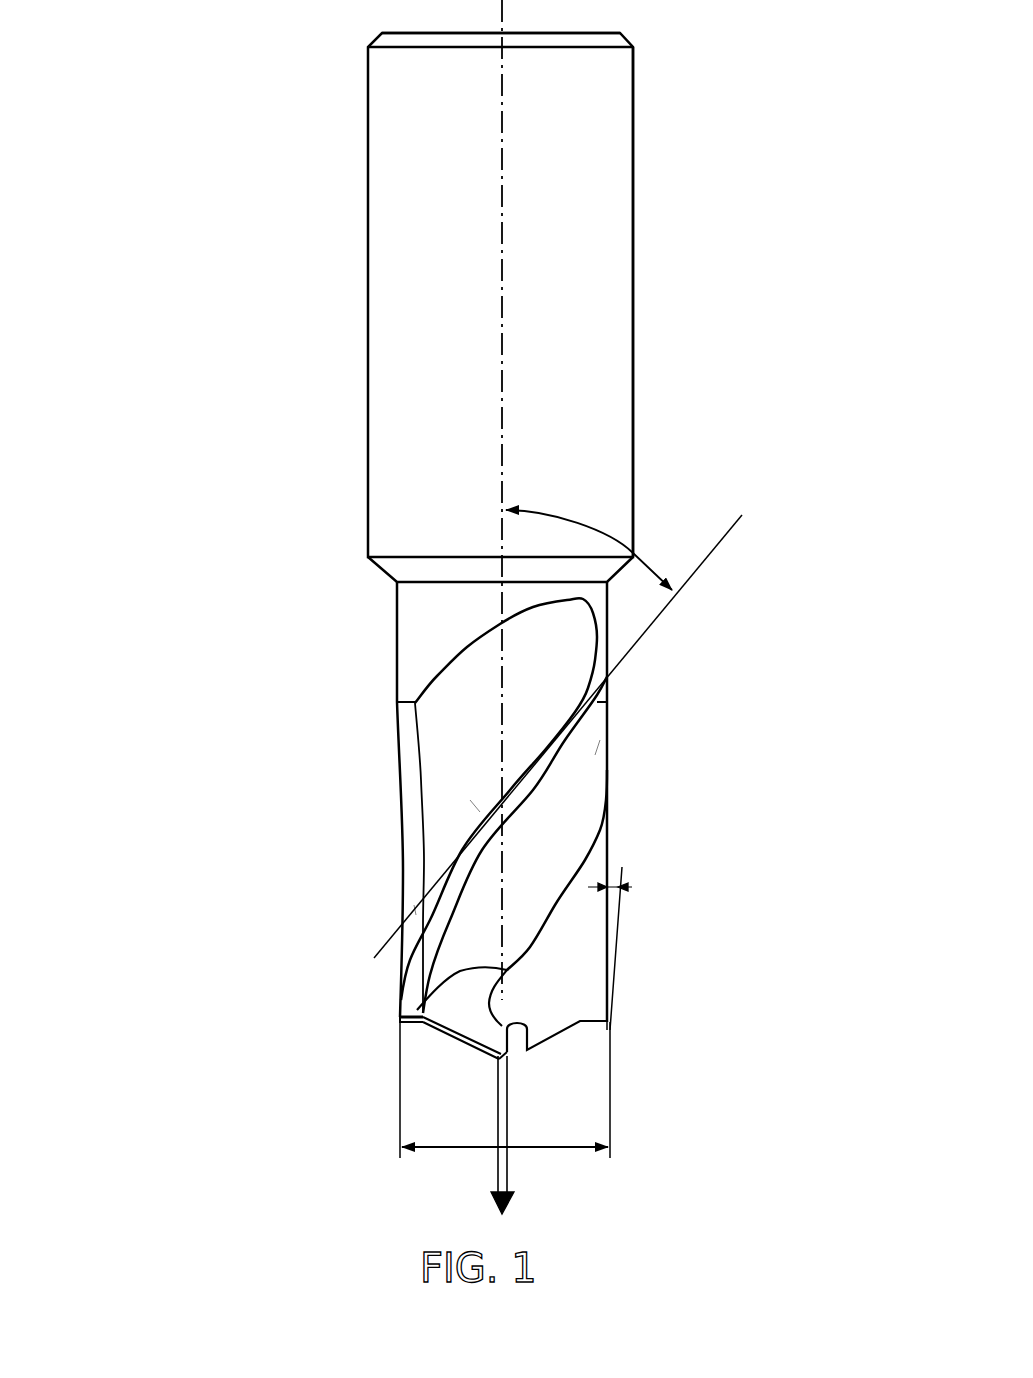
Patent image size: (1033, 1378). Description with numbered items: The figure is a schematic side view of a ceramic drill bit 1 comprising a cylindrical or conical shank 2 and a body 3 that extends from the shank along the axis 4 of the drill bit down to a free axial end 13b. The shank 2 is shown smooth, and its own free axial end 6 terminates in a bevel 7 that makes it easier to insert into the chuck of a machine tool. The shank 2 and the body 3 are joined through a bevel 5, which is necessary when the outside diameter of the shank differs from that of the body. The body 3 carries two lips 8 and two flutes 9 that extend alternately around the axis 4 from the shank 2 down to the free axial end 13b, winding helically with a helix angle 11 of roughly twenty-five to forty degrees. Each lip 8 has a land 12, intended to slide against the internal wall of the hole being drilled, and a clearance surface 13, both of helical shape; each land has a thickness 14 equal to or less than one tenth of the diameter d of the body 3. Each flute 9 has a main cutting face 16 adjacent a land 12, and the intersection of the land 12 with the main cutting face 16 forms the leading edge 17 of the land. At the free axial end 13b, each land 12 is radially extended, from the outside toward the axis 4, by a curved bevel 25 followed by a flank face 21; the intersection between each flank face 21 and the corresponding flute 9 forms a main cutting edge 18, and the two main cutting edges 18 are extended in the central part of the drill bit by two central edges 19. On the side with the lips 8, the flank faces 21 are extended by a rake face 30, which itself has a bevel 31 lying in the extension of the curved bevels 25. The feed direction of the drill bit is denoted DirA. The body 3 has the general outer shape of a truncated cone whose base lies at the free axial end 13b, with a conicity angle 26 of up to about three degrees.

The ceramic drill bit 1 is at (185, 82).
The shank 2 is at (404, 162).
The body 3 is at (366, 670).
The axis 4 is at (507, 15).
The bevel 5 is at (404, 571).
The free axial end of the shank 6 is at (588, 97).
The bevel 7 is at (602, 41).
The lip 8 is at (594, 752).
The flute 9 is at (438, 759).
The helix angle 11 is at (593, 527).
The land 12 is at (536, 780).
The clearance surface 13 is at (530, 855).
The free axial end 13b is at (372, 1021).
The thickness 14 is at (388, 992).
The main cutting face 16 is at (455, 840).
The leading edge 17 is at (483, 817).
The main cutting edge 18 is at (517, 1053).
The central edge 19 is at (507, 1052).
The flank face 21 is at (465, 1040).
The curved bevel 25 is at (408, 1024).
The conicity angle 26 is at (617, 872).
The rake face 30 is at (460, 999).
The bevel 31 is at (421, 914).
The diameter d is at (450, 1150).
The feed direction DirA is at (540, 1135).